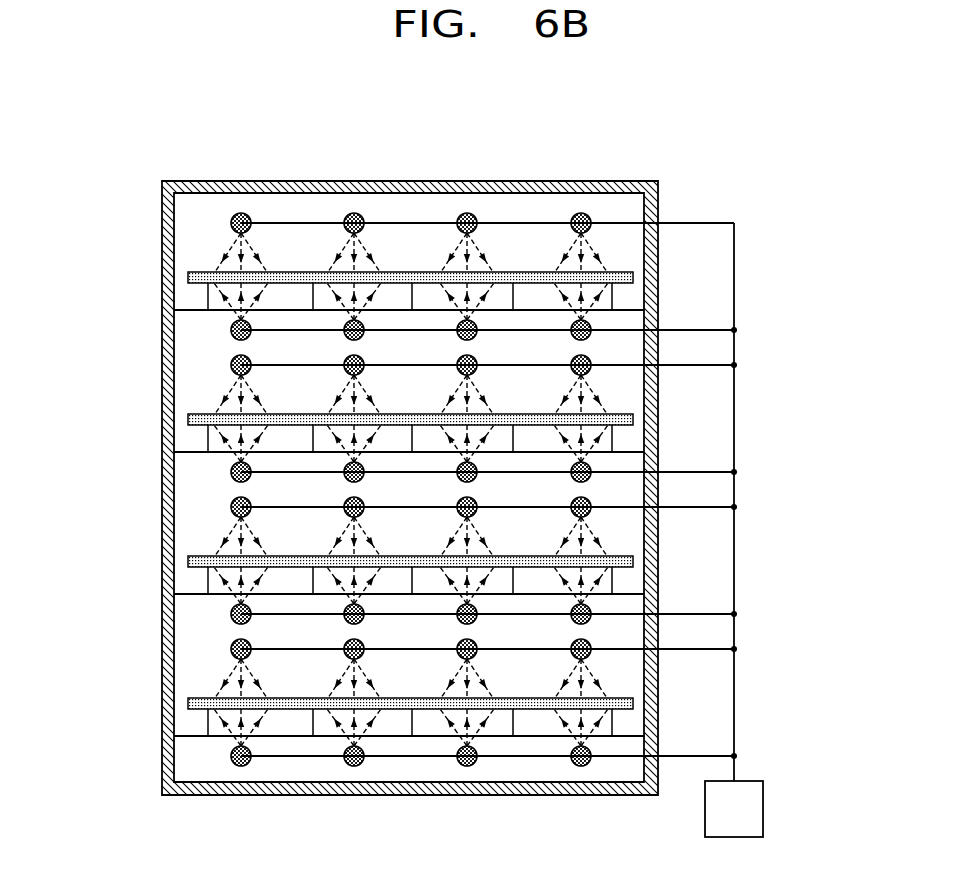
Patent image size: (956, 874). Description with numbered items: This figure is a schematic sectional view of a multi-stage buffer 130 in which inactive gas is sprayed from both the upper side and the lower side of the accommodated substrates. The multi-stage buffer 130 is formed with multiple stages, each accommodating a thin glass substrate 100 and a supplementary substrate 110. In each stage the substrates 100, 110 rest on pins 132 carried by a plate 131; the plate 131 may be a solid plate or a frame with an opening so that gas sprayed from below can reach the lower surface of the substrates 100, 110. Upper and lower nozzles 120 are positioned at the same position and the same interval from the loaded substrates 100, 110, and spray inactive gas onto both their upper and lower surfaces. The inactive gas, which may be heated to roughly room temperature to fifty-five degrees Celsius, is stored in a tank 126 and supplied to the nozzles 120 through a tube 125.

The thin glass substrate 100 is at (342, 269).
The supplementary substrate 110 is at (188, 277).
The nozzle 120 is at (231, 223).
The tube 125 is at (734, 282).
The tank 126 is at (763, 808).
The multi-stage buffer 130 is at (166, 423).
The plate 131 is at (188, 311).
The pin 132 is at (208, 303).